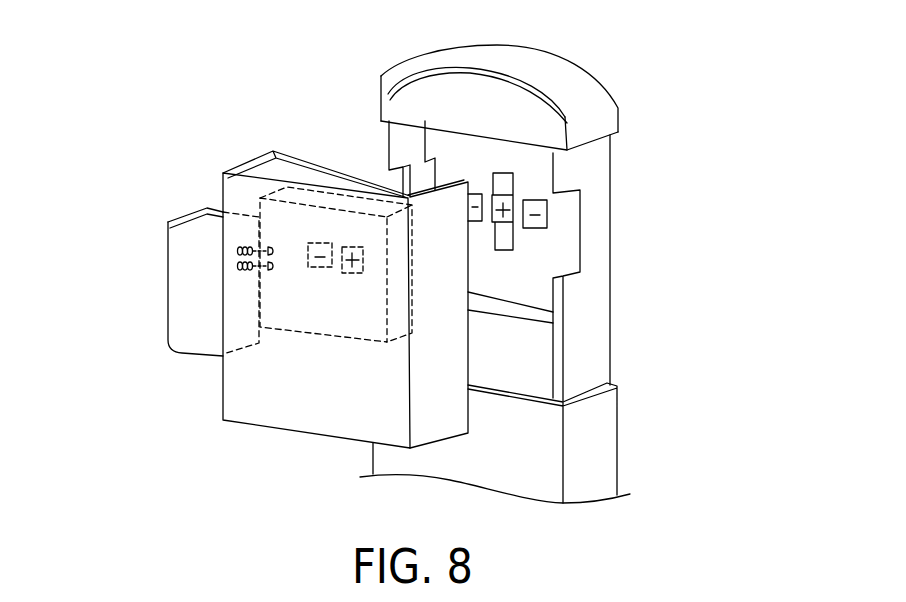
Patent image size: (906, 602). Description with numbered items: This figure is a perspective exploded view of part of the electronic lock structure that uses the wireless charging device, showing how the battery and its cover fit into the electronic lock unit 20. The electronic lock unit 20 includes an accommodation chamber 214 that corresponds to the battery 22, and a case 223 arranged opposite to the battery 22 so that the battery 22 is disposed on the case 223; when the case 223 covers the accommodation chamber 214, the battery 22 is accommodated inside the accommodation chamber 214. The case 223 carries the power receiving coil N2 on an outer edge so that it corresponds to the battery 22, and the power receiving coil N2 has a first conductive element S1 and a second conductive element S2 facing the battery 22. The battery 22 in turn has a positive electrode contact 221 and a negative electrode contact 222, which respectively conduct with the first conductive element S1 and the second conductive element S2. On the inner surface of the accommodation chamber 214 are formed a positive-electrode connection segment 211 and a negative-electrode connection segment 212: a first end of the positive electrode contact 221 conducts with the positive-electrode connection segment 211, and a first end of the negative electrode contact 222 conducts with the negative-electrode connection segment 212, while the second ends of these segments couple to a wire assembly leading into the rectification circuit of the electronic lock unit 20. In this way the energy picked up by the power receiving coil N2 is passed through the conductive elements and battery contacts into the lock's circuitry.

The electronic lock unit 20 is at (563, 259).
The positive-electrode connection segment 211 is at (478, 194).
The negative-electrode connection segment 212 is at (513, 225).
The accommodation chamber 214 is at (513, 275).
The battery 22 is at (304, 290).
The positive electrode contact 221 is at (352, 274).
The negative electrode contact 222 is at (325, 268).
The case 223 is at (237, 169).
The power receiving coil N2 is at (187, 272).
The first conductive element S1 is at (257, 248).
The second conductive element S2 is at (253, 267).